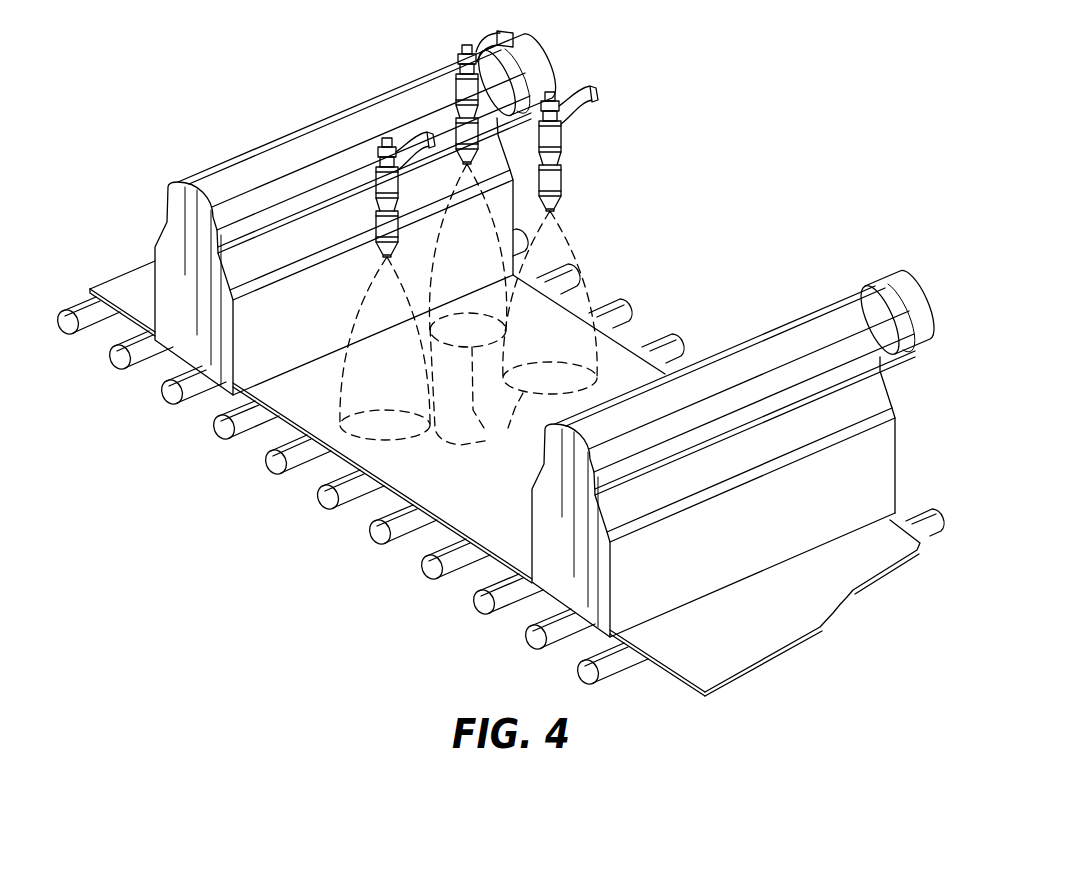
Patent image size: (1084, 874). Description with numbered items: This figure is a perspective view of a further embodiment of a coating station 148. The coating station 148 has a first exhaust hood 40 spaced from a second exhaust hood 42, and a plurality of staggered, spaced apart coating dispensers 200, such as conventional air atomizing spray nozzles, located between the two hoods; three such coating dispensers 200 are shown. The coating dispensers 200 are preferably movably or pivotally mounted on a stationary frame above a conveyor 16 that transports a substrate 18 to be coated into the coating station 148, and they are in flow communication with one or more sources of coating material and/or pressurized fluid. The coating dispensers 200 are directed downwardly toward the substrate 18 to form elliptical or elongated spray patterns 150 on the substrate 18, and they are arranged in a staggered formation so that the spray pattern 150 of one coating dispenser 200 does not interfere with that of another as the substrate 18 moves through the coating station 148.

The conveyor 16 is at (226, 485).
The substrate 18 is at (133, 283).
The first exhaust hood 40 is at (405, 97).
The second exhaust hood 42 is at (773, 328).
The coating station 148 is at (713, 147).
The elongated spray pattern 150 is at (468, 314).
The coating dispenser 200 is at (458, 90).